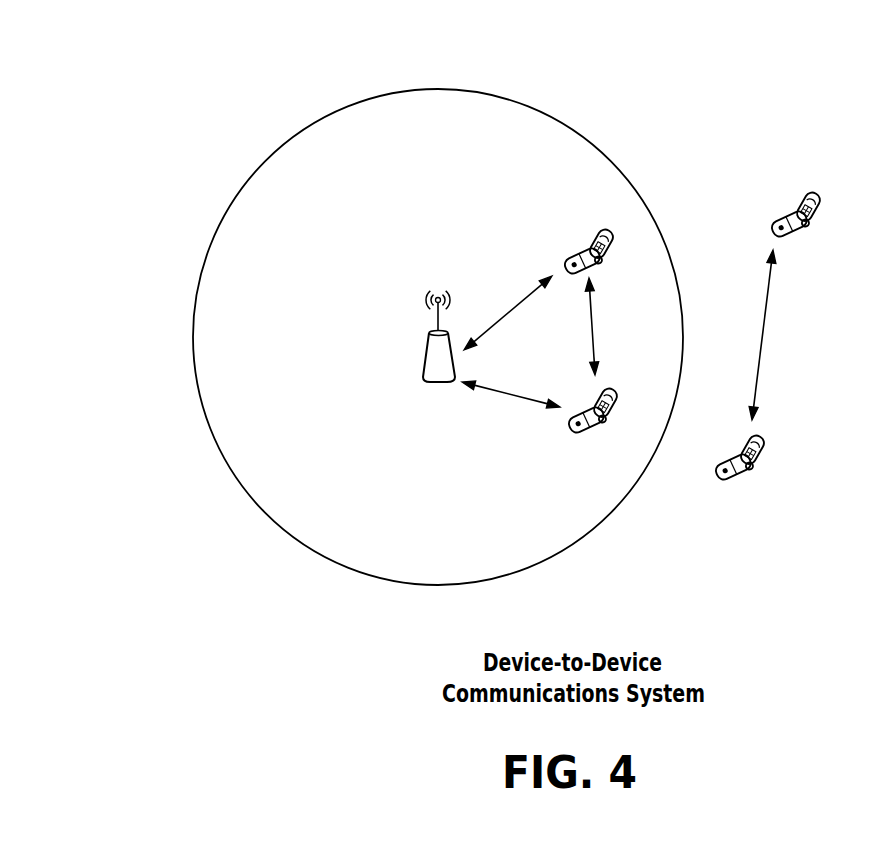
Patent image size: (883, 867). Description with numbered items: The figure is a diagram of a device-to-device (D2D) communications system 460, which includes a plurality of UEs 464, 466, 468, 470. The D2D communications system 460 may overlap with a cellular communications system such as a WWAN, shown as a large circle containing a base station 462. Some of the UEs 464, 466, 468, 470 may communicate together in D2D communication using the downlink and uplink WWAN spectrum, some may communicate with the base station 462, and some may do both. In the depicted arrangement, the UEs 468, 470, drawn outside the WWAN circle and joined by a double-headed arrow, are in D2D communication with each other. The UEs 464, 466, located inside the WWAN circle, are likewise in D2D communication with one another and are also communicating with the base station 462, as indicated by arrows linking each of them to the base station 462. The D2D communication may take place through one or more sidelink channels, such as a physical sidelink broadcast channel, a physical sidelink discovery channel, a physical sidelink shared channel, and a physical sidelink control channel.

The device-to-device communications system 460 is at (94, 89).
The base station 462 is at (440, 279).
The UE 464 is at (592, 222).
The UE 466 is at (571, 429).
The UE 468 is at (812, 183).
The UE 470 is at (726, 482).